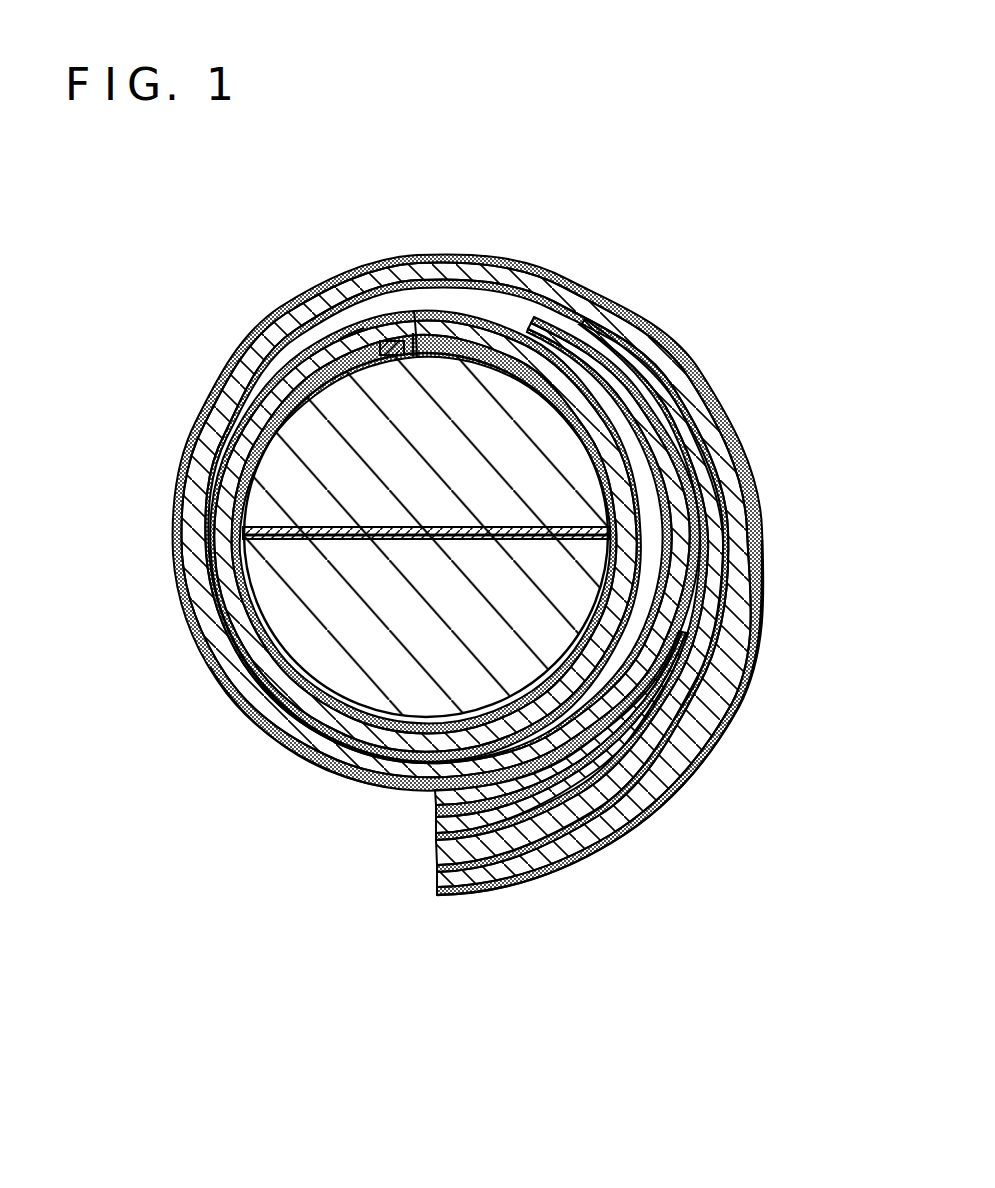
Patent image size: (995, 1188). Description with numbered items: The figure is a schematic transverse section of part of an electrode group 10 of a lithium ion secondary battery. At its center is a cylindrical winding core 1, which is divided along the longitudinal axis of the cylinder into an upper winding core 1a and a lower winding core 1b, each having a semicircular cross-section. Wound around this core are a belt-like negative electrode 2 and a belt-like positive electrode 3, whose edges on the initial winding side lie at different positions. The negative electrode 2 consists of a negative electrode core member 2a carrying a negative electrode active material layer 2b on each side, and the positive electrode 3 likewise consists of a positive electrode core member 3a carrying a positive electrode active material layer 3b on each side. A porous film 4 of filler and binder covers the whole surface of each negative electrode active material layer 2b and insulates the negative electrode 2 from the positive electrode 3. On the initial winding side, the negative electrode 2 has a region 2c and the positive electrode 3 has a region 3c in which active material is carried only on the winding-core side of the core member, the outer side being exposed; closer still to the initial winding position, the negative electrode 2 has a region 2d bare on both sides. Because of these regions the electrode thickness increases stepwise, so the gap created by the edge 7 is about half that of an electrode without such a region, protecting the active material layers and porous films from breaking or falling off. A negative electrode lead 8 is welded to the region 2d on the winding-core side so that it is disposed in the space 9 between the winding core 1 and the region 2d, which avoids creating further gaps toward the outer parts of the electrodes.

The electrode group 10 is at (660, 184).
The winding core 1 is at (72, 467).
The upper winding core 1a is at (286, 482).
The lower winding core 1b is at (275, 585).
The negative electrode 2 is at (831, 352).
The negative electrode core member 2a is at (614, 392).
The negative electrode active material layer 2b is at (633, 444).
The region where the active material layer is carried on only one side of the core m 2c is at (552, 298).
The region where the active material layer is carried on neither side of the core me 2d is at (432, 527).
The positive electrode 3 is at (645, 950).
The positive electrode core member 3a is at (573, 767).
The positive electrode active material layer 3b is at (497, 788).
The region where the active material layer is carried on only one side of the core m 3c is at (765, 645).
The porous film 4 is at (343, 766).
The edge 7 is at (414, 334).
The negative electrode lead 8 is at (388, 343).
The space 9 is at (353, 330).